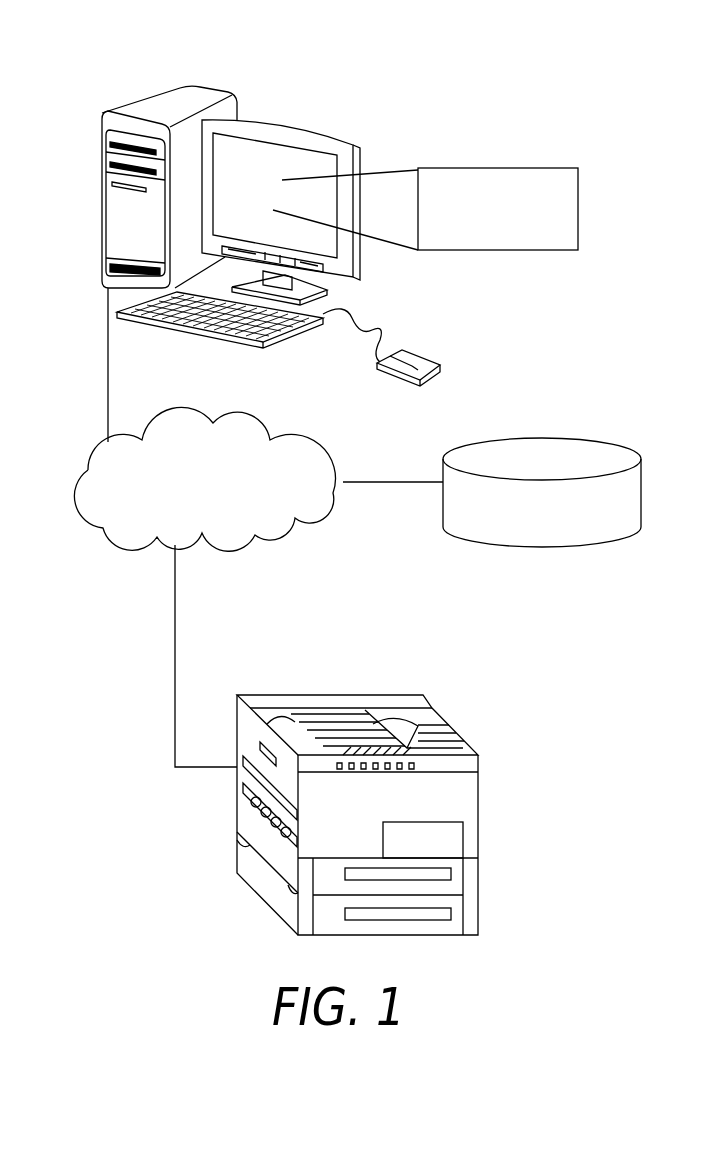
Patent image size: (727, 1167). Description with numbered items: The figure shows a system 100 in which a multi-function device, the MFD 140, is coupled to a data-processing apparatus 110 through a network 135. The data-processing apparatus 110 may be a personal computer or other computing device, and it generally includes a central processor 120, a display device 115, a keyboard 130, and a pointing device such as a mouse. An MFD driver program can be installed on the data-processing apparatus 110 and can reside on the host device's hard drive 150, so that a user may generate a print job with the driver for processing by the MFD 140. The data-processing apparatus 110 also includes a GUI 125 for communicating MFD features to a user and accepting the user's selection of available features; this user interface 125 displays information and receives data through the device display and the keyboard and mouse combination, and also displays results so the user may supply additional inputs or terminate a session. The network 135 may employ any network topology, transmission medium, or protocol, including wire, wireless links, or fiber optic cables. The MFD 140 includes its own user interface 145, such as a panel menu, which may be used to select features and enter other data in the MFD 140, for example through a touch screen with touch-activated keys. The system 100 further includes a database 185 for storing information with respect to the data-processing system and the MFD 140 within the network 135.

The system 100 is at (443, 67).
The hard drive 150 is at (140, 100).
The central processor 120 is at (102, 275).
The display device 115 is at (283, 125).
The data-processing apparatus 110 is at (300, 153).
The GUI 125 is at (523, 168).
The keyboard 130 is at (190, 327).
The network 135 is at (237, 425).
The database 185 is at (583, 437).
The MFD 140 is at (365, 695).
The user interface 145 is at (405, 748).